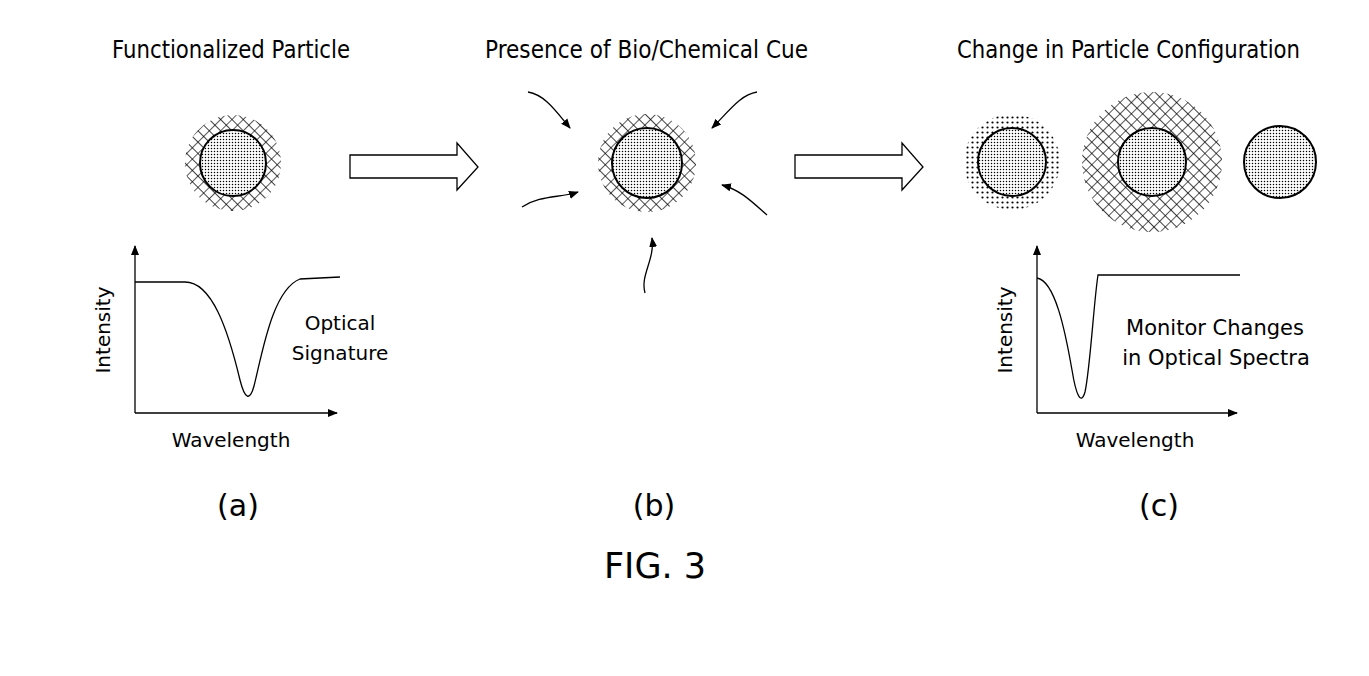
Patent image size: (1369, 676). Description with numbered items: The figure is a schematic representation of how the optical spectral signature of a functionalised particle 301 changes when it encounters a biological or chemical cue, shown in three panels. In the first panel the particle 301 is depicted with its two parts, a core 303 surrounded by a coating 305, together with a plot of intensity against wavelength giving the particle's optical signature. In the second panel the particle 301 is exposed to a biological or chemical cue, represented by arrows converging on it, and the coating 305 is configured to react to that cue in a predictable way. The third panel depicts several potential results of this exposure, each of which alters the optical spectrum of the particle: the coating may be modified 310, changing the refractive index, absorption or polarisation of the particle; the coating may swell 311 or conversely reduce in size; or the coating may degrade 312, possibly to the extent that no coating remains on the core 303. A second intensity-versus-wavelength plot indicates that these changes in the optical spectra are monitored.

The particle 301 is at (160, 164).
The core 303 is at (187, 160).
The coating 305 is at (185, 186).
The modified coating 310 is at (971, 126).
The swollen coating 311 is at (1090, 122).
The degraded coating 312 is at (1302, 199).